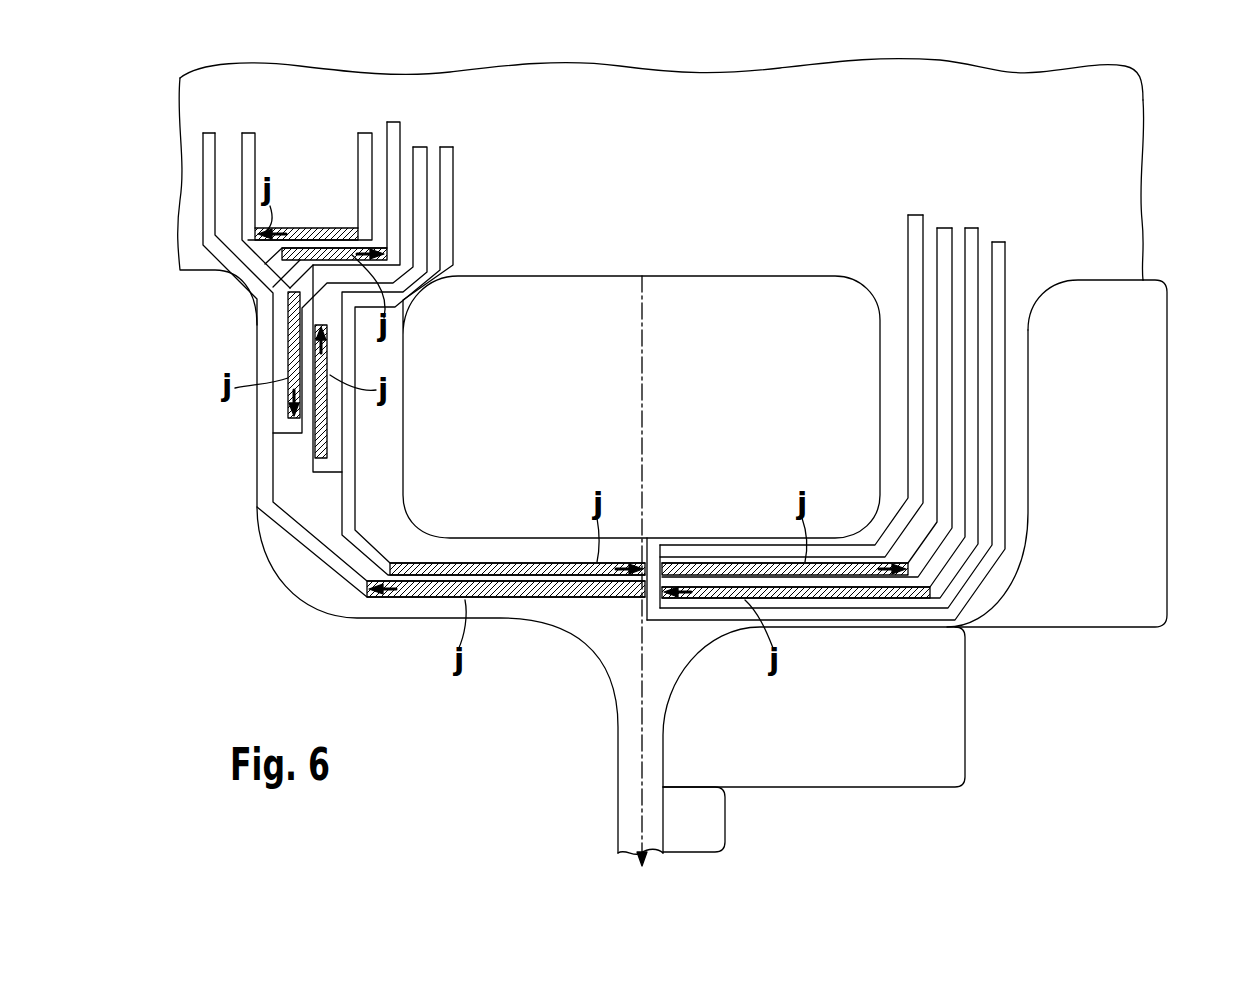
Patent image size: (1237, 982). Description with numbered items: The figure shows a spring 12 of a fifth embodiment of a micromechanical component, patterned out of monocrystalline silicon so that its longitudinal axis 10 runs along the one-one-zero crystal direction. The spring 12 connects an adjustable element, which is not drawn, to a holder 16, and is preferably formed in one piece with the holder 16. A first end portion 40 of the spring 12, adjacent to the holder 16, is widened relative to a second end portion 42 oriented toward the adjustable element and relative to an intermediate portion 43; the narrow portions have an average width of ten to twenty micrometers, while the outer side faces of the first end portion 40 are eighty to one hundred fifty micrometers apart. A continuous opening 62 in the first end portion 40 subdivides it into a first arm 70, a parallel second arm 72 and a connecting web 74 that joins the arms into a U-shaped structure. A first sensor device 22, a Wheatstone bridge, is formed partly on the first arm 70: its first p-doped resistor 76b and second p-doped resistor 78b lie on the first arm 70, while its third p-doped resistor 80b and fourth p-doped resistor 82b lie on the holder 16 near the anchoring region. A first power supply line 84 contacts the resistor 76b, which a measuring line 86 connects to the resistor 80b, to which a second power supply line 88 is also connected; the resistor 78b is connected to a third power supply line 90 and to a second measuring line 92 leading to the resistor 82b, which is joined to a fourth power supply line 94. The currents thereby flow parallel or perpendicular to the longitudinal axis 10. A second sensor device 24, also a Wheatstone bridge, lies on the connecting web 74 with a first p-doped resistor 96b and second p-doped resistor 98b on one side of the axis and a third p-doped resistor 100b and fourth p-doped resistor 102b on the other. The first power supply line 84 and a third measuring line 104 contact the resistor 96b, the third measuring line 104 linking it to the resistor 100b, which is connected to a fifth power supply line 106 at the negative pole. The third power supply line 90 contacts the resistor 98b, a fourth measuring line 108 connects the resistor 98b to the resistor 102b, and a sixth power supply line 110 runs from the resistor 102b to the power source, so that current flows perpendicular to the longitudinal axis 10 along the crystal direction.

The longitudinal axis 10 is at (648, 804).
The spring 12 is at (727, 667).
The holder 16 is at (1105, 122).
The first sensor device 22 is at (392, 362).
The second sensor device 24 is at (807, 640).
The first end portion 40 is at (1167, 460).
The second end portion 42 is at (725, 818).
The intermediate portion 43 is at (965, 712).
The opening 62 is at (702, 423).
The first arm 70 is at (380, 415).
The second arm 72 is at (895, 383).
The connecting web 74 is at (497, 612).
The first p-doped resistor 76b is at (288, 355).
The second p-doped resistor 78b is at (327, 428).
The third p-doped resistor 80b is at (305, 228).
The fourth p-doped resistor 82b is at (360, 262).
The first power supply line 84 is at (287, 525).
The measuring line 86 is at (250, 134).
The second power supply line 88 is at (359, 156).
The third power supply line 90 is at (348, 497).
The second measuring line 92 is at (420, 146).
The fourth power supply line 94 is at (393, 121).
The first p-doped resistor 96b is at (445, 600).
The second p-doped resistor 98b is at (527, 562).
The third p-doped resistor 100b is at (845, 600).
The fourth p-doped resistor 102b is at (743, 562).
The third measuring line 104 is at (972, 572).
The fifth power supply line 106 is at (972, 438).
The fourth measuring line 108 is at (880, 510).
The sixth power supply line 110 is at (943, 348).